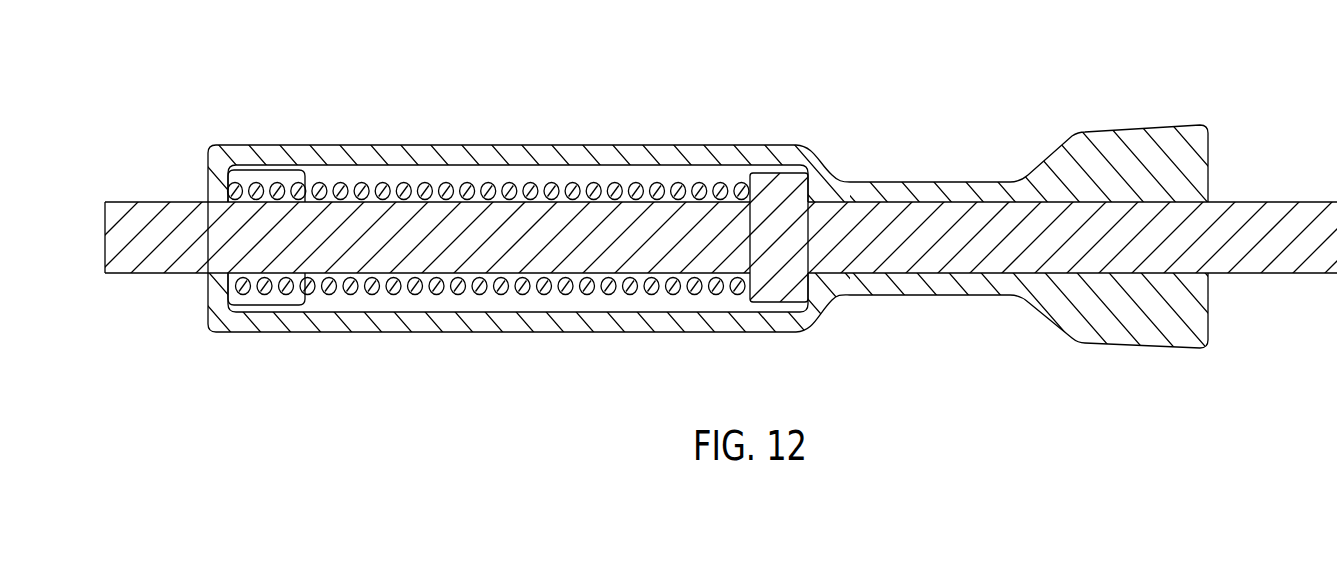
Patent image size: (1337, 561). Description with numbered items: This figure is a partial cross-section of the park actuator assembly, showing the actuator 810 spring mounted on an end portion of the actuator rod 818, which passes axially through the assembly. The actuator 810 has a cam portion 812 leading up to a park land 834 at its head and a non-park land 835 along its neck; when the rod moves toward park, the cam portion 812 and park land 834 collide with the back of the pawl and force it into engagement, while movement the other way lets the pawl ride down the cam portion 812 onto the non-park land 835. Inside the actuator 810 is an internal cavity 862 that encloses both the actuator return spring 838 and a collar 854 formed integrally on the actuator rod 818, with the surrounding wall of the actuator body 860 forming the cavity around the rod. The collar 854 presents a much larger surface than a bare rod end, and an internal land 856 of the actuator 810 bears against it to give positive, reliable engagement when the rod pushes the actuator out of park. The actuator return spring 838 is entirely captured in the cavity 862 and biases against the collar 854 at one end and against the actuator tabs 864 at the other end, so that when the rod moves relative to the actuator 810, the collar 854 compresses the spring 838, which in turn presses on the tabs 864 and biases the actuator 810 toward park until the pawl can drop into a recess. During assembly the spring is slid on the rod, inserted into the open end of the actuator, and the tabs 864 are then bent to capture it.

The actuator 810 is at (976, 92).
The cam portion 812 is at (1047, 318).
The actuator rod 818 is at (1282, 202).
The park land 834 is at (1180, 350).
The non-park land 835 is at (925, 182).
The actuator return spring 838 is at (553, 190).
The collar 854 is at (768, 185).
The internal land 856 is at (822, 180).
The housing 860 is at (412, 172).
The internal cavity 862 is at (348, 287).
The actuator tabs 864 is at (230, 165).